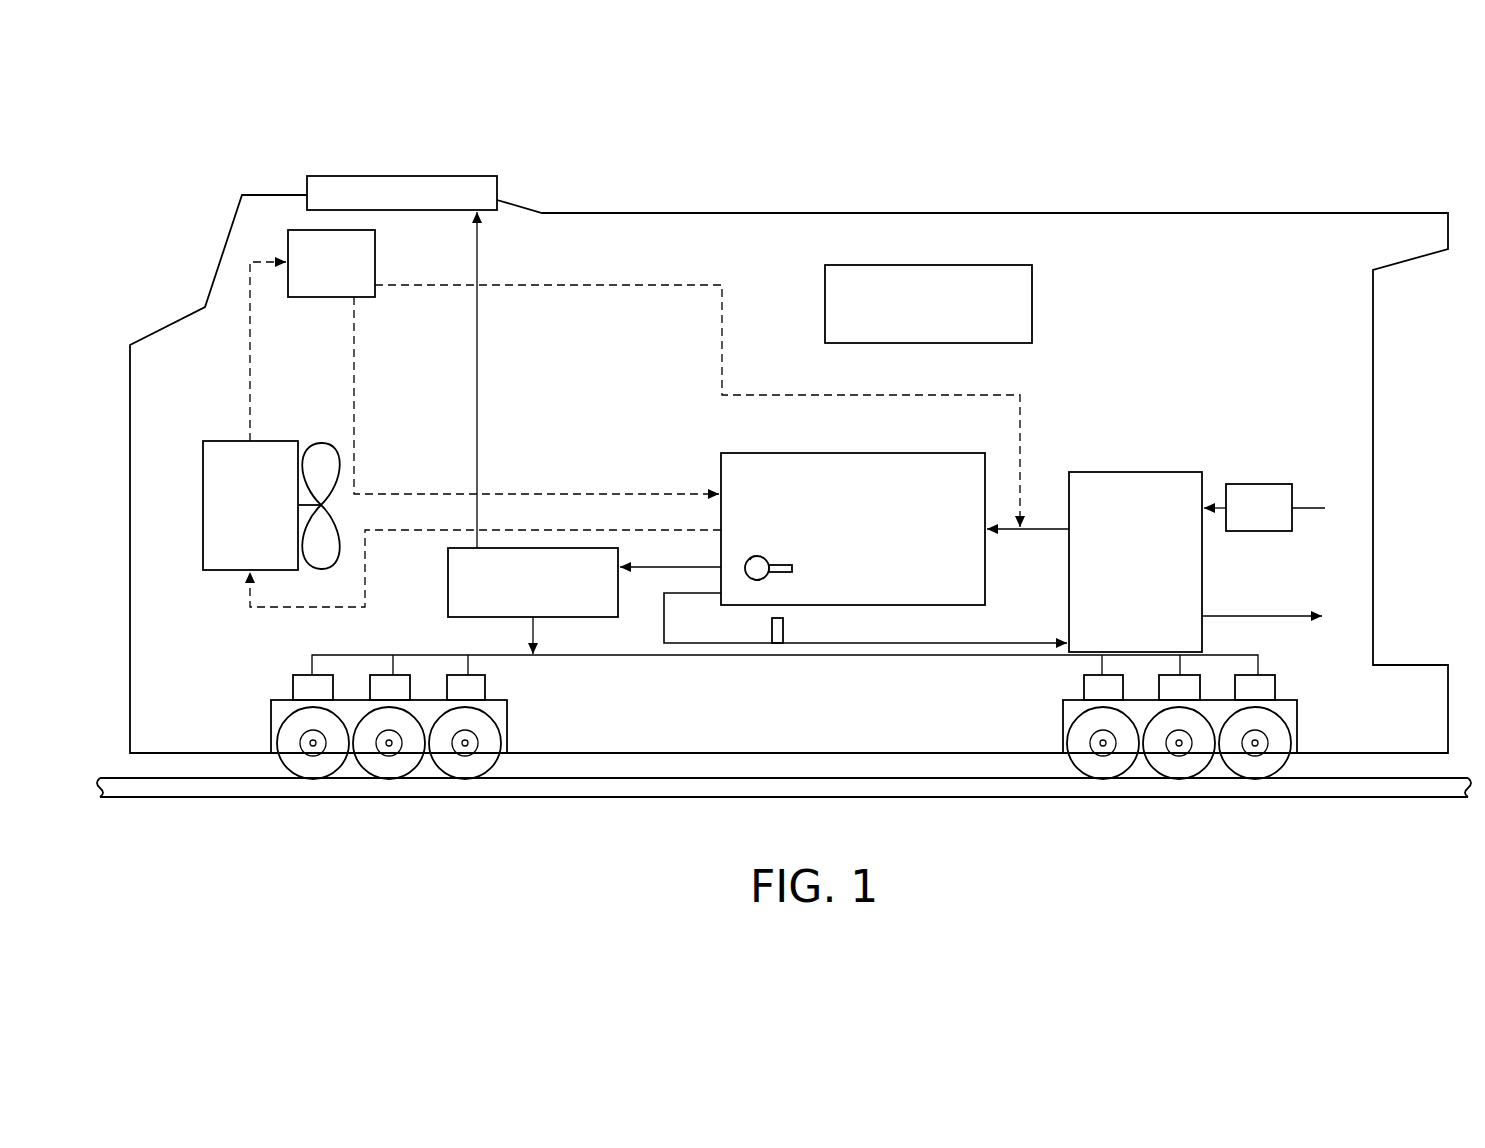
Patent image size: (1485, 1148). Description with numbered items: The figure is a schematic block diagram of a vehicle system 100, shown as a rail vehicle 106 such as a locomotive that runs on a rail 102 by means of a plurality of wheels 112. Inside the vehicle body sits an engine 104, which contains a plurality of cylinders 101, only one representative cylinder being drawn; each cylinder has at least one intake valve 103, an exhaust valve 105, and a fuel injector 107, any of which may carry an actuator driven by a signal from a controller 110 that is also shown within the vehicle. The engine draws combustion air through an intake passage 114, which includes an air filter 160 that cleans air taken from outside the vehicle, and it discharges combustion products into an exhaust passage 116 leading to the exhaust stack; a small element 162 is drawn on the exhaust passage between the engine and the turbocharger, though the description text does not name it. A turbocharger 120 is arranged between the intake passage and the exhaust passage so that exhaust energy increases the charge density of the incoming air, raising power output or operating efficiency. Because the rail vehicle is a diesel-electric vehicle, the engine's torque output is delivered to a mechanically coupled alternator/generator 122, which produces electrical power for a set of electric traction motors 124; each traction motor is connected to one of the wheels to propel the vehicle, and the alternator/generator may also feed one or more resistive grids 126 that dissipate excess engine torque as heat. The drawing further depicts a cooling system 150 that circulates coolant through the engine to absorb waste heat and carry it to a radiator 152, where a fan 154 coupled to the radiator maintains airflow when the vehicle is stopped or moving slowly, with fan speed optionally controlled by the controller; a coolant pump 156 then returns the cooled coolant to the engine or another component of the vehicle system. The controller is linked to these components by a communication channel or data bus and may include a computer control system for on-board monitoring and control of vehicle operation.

The vehicle system 100 is at (1268, 148).
The cylinder 101 is at (766, 560).
The rail 102 is at (1372, 800).
The intake valve 103 is at (751, 558).
The engine 104 is at (895, 529).
The exhaust valve 105 is at (757, 581).
The rail vehicle 106 is at (1102, 213).
The fuel injector 107 is at (787, 574).
The controller 110 is at (1034, 280).
The wheels 112 is at (492, 728).
The intake passage 114 is at (1308, 503).
The exhaust passage 116 is at (683, 597).
The turbocharger 120 is at (1135, 562).
The alternator/generator 122 is at (448, 586).
The electric traction motors 124 is at (486, 690).
The resistive grids 126 is at (484, 176).
The cooling system 150 is at (225, 395).
The radiator 152 is at (250, 505).
The fan 154 is at (328, 442).
The coolant pump 156 is at (635, 378).
The air filter 160 is at (1248, 507).
The exhaust gas sensor 162 is at (784, 632).